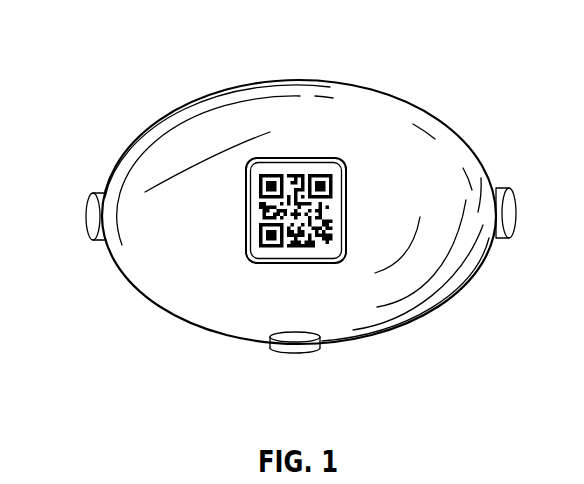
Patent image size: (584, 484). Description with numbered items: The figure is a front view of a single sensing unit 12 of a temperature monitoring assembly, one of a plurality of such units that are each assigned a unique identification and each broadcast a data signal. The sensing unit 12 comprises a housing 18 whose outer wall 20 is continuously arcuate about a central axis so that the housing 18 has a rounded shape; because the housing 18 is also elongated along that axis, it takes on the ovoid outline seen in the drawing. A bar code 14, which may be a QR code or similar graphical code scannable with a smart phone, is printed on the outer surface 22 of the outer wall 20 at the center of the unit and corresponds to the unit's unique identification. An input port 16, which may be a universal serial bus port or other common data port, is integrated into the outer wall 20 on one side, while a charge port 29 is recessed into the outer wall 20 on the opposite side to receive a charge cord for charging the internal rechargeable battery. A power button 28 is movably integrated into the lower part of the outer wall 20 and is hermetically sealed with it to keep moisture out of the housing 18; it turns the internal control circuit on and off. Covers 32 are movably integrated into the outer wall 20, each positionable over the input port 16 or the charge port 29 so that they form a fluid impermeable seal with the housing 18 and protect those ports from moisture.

The sensing unit 12 is at (146, 41).
The bar code 14 is at (325, 157).
The input port 16 is at (92, 215).
The housing 18 is at (157, 123).
The outer wall 20 is at (180, 293).
The outer surface 22 is at (418, 275).
The power button 28 is at (322, 341).
The charge port 29 is at (500, 188).
The cover 32 is at (512, 215).